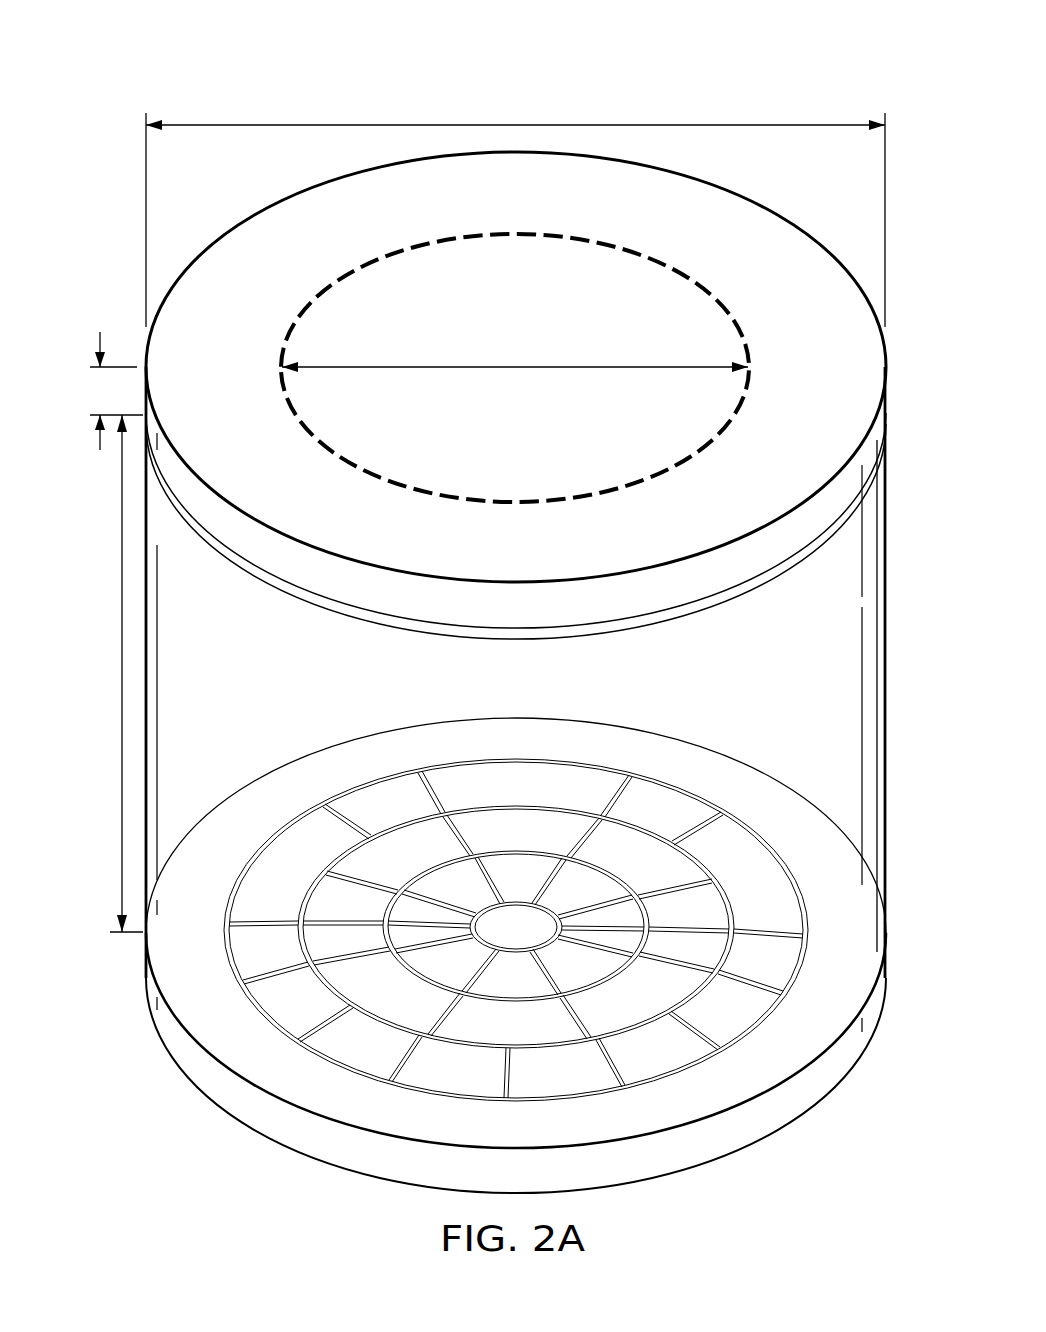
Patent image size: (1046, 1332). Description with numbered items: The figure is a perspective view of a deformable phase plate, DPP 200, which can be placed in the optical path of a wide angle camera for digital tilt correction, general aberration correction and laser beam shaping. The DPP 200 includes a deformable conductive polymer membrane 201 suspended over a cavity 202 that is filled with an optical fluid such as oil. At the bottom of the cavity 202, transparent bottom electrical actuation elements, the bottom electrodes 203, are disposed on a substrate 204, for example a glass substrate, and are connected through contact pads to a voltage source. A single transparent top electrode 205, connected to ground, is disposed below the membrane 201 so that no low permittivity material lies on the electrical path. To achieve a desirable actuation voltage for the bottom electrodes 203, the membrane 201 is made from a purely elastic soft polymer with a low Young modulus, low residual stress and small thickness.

The DPP 200 is at (350, 72).
The deformable conductive polymer membrane 201 is at (785, 248).
The cavity 202 is at (877, 643).
The bottom electrodes 203 is at (258, 1016).
The substrate 204 is at (760, 1117).
The top electrode 205 is at (720, 598).